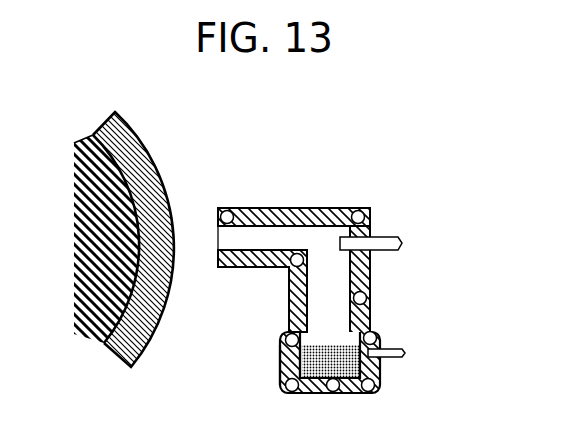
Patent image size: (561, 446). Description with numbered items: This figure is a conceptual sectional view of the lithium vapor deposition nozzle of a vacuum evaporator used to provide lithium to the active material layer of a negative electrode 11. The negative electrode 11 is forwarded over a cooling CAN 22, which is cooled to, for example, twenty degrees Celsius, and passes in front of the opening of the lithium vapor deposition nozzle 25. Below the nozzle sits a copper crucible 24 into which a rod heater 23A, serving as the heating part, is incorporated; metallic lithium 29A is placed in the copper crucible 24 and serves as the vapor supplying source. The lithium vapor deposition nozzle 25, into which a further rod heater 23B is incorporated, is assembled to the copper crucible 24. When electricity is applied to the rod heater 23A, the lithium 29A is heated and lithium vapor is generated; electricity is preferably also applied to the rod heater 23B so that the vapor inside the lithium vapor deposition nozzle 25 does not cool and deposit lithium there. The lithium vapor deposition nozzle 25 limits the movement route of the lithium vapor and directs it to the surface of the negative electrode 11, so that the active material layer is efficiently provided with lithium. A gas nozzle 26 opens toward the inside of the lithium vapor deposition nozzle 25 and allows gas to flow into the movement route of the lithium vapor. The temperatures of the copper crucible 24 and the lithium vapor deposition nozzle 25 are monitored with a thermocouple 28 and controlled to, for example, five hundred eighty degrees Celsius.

The negative electrode 11 is at (128, 125).
The cooling CAN 22 is at (115, 340).
The rod heater 23A is at (368, 387).
The rod heater 23B is at (228, 212).
The copper crucible 24 is at (300, 395).
The lithium vapor deposition nozzle 25 is at (334, 207).
The gas nozzle 26 is at (402, 248).
The thermocouple 28 is at (403, 356).
The lithium 29A is at (283, 363).